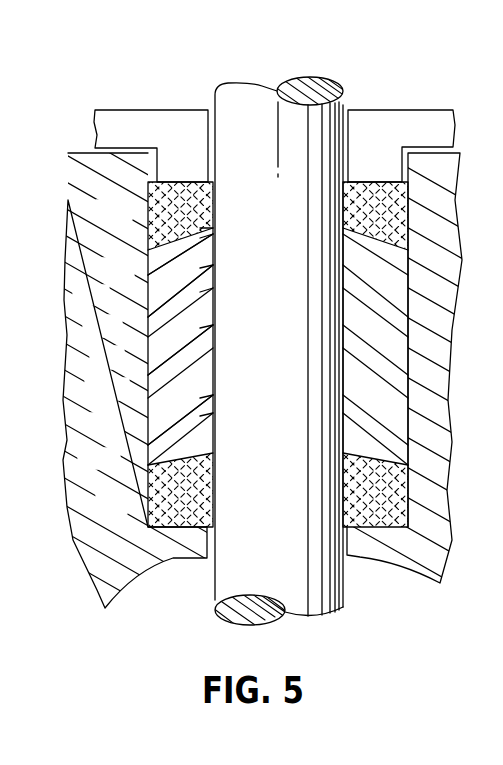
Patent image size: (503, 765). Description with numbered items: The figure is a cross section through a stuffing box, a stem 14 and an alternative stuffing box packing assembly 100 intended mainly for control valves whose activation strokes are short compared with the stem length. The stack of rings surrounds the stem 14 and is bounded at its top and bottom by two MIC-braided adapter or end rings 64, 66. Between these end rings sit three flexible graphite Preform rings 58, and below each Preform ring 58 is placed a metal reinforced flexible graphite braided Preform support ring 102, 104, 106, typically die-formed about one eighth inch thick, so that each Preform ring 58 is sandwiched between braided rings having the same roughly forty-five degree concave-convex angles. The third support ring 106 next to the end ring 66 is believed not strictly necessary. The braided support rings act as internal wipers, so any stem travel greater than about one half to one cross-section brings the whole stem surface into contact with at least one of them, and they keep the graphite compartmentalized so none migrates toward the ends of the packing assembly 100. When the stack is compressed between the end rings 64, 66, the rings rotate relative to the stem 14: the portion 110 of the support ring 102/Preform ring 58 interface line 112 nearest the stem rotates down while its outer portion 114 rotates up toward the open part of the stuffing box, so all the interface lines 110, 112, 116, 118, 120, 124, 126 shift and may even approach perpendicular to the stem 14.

The stem 14 is at (323, 78).
The packing assembly 100 is at (190, 85).
The adapter ring 64 is at (160, 208).
The adapter ring 66 is at (167, 503).
The Preform ring 58 is at (160, 281).
The outer portion of interface line 114 is at (142, 315).
The MIC-braid Preform support ring 102 is at (150, 328).
The MIC-braid Preform support ring 104 is at (148, 387).
The MIC-braid Preform support ring 106 is at (147, 457).
The interface line 112 is at (210, 248).
The portion of interface line 110 is at (210, 282).
The interface line 116 is at (212, 293).
The interface line 118 is at (210, 335).
The interface line 120 is at (208, 345).
The interface line 124 is at (208, 390).
The interface line 126 is at (208, 417).